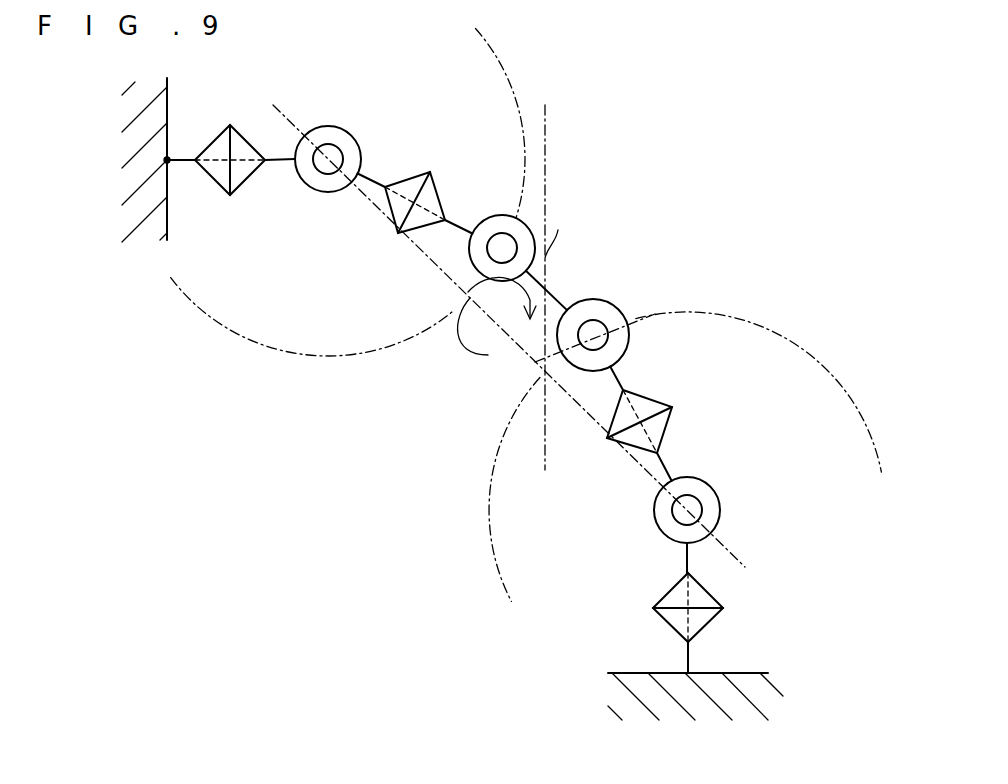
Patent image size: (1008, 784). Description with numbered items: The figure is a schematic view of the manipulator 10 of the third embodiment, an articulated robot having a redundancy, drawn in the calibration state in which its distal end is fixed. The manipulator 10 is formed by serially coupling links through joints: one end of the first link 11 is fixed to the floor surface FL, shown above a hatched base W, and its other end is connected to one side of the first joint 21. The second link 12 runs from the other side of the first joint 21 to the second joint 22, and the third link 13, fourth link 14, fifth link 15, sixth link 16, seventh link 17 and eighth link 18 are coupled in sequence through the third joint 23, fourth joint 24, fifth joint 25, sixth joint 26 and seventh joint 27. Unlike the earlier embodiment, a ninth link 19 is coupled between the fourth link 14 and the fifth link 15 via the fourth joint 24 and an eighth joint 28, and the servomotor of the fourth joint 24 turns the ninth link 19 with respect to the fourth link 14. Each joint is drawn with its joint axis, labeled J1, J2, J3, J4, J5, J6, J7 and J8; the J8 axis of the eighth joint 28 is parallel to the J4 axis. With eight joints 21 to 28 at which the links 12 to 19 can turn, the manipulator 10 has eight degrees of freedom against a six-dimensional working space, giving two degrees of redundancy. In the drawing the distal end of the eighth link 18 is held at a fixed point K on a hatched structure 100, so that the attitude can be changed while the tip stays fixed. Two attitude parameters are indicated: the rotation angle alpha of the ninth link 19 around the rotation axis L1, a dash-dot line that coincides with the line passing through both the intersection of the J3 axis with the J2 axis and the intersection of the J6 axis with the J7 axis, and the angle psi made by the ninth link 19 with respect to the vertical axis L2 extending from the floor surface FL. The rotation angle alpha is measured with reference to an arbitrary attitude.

The manipulator 10 is at (772, 63).
The first link 11 is at (689, 657).
The second link 12 is at (687, 556).
The third link 13 is at (664, 466).
The fourth link 14 is at (618, 377).
The fifth link 15 is at (458, 224).
The sixth link 16 is at (370, 185).
The seventh link 17 is at (280, 162).
The eighth link 18 is at (178, 158).
The ninth link 19 is at (550, 290).
The first joint 21 is at (708, 595).
The second joint 22 is at (720, 496).
The third joint 23 is at (672, 407).
The fourth joint 24 is at (598, 300).
The fifth joint 25 is at (432, 170).
The sixth joint 26 is at (362, 147).
The seventh joint 27 is at (243, 130).
The eighth joint 28 is at (478, 288).
The wall 100 is at (167, 222).
The fixed point K is at (163, 160).
The floor surface FL is at (635, 673).
The installation surface W is at (690, 680).
The rotation axis L1 is at (546, 375).
The vertical axis L2 is at (545, 145).
The joint axis J1 is at (700, 612).
The J2 axis J2 is at (690, 510).
The J3 axis J3 is at (642, 425).
The J4 axis J4 is at (596, 332).
The joint axis J5 is at (414, 200).
The J6 axis J6 is at (329, 157).
The J7 axis J7 is at (228, 155).
The J8 axis J8 is at (501, 246).